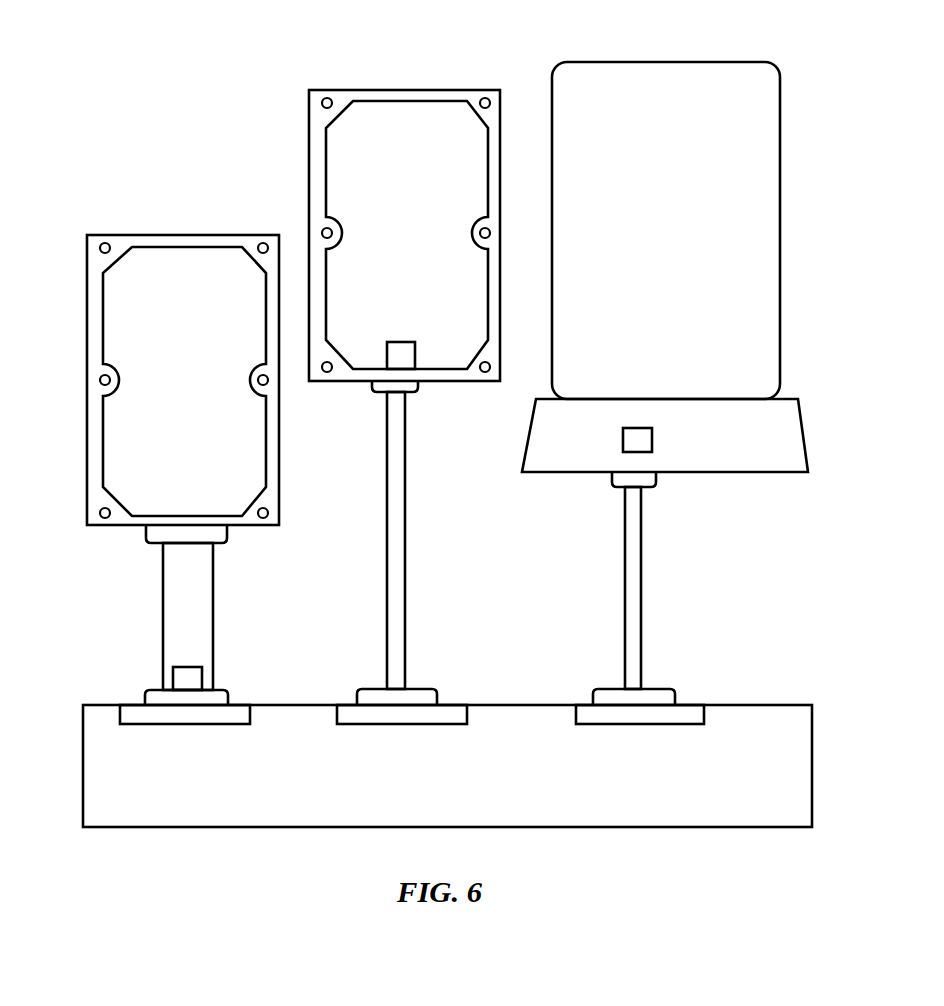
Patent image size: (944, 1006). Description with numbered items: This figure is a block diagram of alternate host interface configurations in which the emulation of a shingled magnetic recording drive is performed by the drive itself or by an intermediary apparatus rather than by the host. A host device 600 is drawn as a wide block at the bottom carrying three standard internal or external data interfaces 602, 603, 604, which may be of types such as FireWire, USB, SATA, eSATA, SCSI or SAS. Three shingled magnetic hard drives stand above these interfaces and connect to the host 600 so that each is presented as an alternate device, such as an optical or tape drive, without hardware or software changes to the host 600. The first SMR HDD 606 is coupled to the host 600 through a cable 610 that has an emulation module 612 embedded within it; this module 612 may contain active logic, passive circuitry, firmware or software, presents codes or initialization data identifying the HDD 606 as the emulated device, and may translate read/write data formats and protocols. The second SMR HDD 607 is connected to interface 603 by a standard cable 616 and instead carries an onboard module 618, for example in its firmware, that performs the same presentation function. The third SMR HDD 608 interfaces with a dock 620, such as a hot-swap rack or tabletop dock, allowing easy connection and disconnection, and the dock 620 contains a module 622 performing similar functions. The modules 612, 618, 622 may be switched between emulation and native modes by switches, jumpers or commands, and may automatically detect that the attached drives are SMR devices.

The host device 600 is at (134, 820).
The data interface 602 is at (138, 712).
The data interface 603 is at (355, 712).
The data interface 604 is at (590, 714).
The first SMR HDD 606 is at (110, 235).
The second SMR HDD 607 is at (316, 90).
The third SMR HDD 608 is at (587, 67).
The cable 610 is at (163, 585).
The emulation module 612 is at (182, 667).
The standard cable 616 is at (390, 430).
The onboard module 618 is at (408, 355).
The dock 620 is at (547, 467).
The module 622 is at (645, 445).